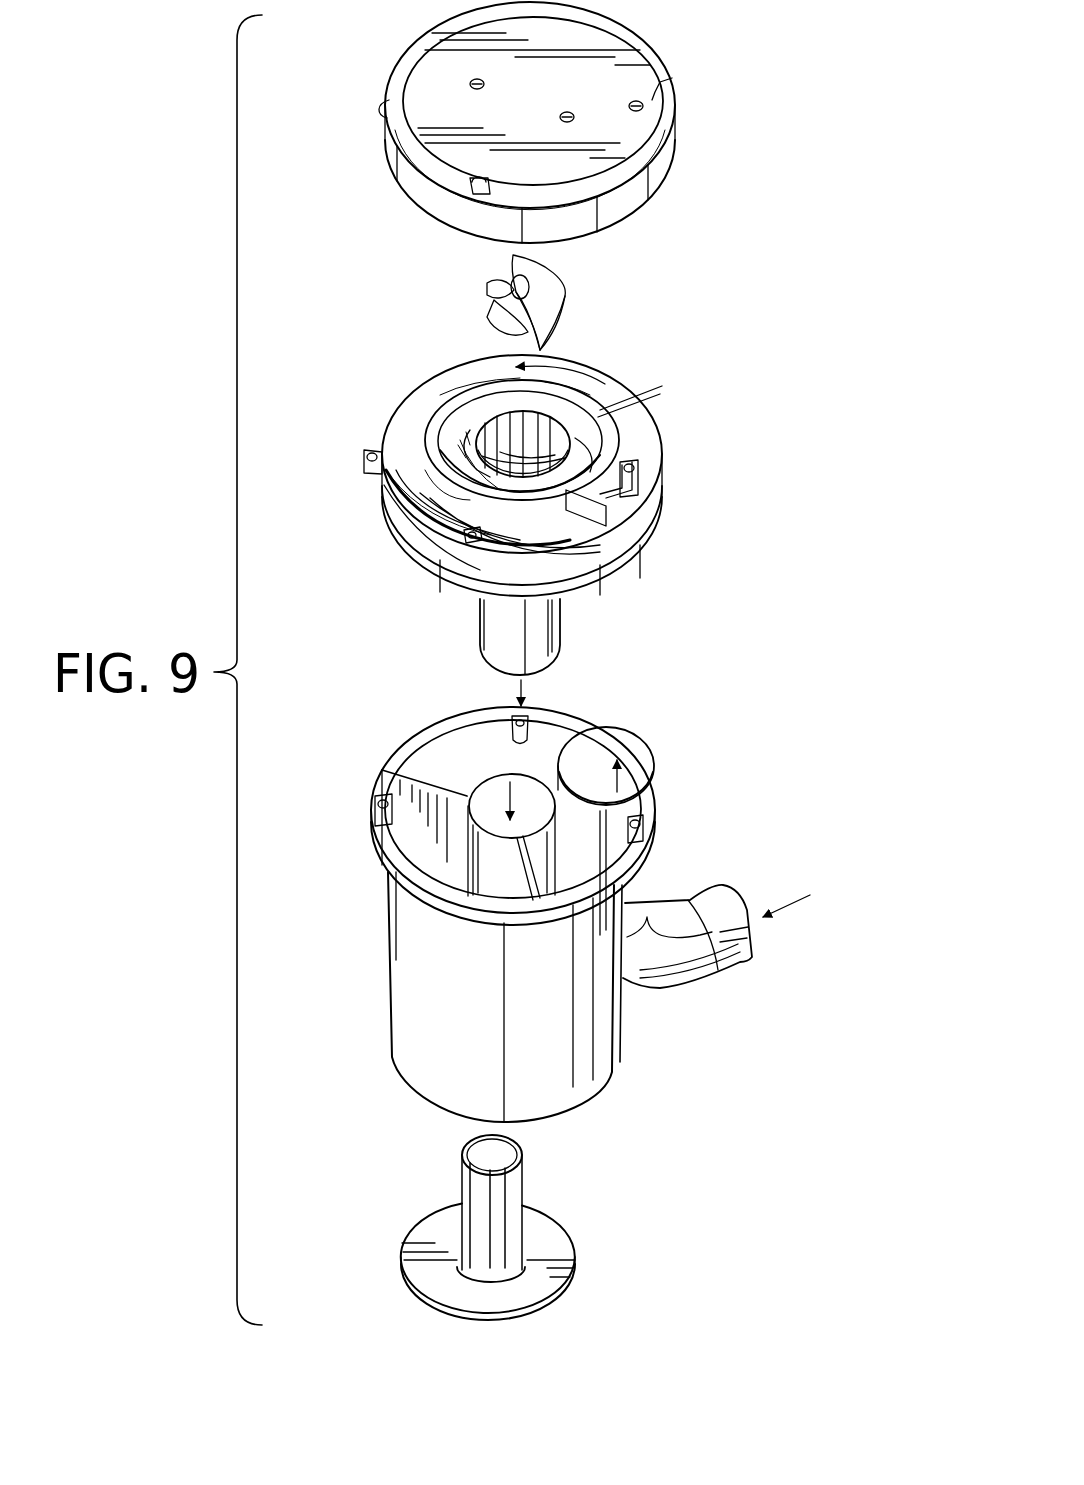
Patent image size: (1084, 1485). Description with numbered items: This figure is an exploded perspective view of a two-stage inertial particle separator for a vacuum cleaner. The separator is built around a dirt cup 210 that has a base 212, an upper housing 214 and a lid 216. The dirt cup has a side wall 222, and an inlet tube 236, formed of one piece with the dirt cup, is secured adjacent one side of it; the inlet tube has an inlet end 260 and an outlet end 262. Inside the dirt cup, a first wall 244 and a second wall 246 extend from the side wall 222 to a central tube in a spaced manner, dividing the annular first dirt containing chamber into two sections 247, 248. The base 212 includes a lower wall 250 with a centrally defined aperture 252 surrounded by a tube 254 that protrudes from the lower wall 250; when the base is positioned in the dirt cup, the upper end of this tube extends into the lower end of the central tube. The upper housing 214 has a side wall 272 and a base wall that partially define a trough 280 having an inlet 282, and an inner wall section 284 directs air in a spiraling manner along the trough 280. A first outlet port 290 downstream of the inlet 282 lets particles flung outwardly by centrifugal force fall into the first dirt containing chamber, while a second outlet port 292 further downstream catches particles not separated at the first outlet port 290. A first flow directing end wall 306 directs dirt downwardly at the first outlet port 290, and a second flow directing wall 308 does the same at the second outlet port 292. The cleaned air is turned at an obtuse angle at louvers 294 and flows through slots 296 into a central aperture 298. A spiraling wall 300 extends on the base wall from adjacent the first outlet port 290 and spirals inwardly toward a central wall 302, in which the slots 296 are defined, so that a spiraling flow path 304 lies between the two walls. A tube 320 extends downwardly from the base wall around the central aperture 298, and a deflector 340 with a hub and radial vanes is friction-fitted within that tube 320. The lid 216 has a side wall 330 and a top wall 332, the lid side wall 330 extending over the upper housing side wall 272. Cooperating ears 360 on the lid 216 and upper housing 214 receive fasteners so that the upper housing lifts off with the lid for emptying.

The dirt cup 210 is at (564, 910).
The base 212 is at (530, 1219).
The upper housing 214 is at (667, 473).
The lid 216 is at (528, 129).
The side wall 222 is at (600, 1050).
The inlet tube 236 is at (687, 977).
The first wall 244 is at (417, 832).
The second wall 246 is at (518, 872).
The section 247 is at (587, 840).
The section 248 is at (445, 870).
The lower wall 250 is at (573, 1268).
The aperture 252 is at (483, 1148).
The tube 254 is at (505, 1195).
The inlet end 260 is at (752, 932).
The outlet end 262 is at (600, 747).
The side wall 272 is at (452, 567).
The trough 280 is at (552, 495).
The inlet 282 is at (587, 387).
The inner wall section 284 is at (448, 522).
The first outlet port 290 is at (612, 523).
The second outlet port 292 is at (447, 470).
The louvers 294 is at (512, 420).
The slots 296 is at (487, 458).
The central aperture 298 is at (520, 446).
The spiraling wall 300 is at (620, 448).
The central wall 302 is at (600, 406).
The spiraling flow path 304 is at (540, 500).
The first flow directing end wall 306 is at (642, 489).
The second flow directing wall 308 is at (499, 525).
The tube 320 is at (552, 630).
The side wall 330 is at (455, 214).
The top wall 332 is at (627, 75).
The deflector 340 is at (572, 291).
The ears 360 is at (381, 100).